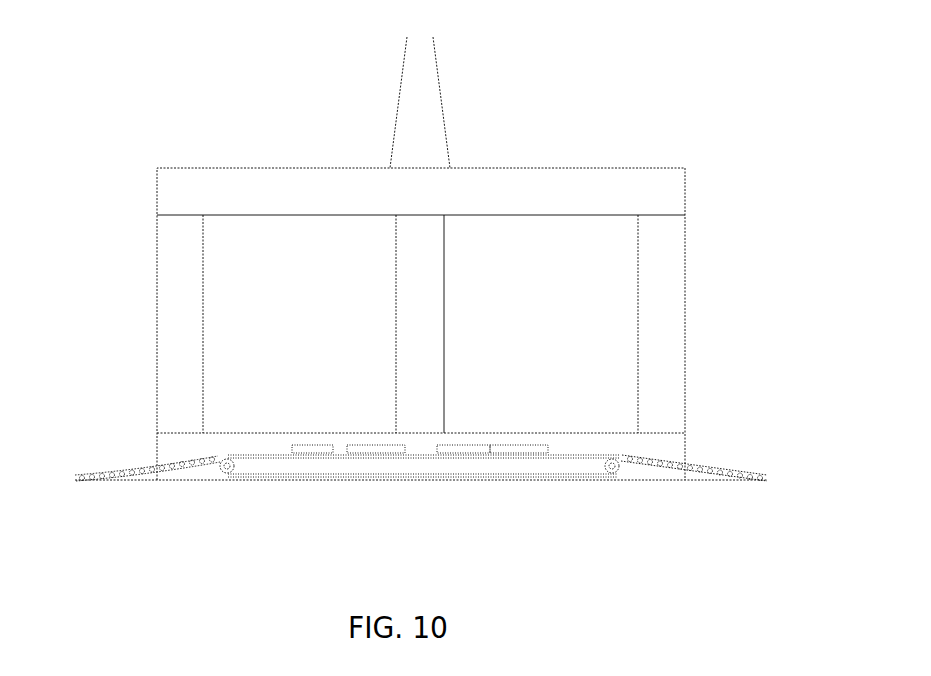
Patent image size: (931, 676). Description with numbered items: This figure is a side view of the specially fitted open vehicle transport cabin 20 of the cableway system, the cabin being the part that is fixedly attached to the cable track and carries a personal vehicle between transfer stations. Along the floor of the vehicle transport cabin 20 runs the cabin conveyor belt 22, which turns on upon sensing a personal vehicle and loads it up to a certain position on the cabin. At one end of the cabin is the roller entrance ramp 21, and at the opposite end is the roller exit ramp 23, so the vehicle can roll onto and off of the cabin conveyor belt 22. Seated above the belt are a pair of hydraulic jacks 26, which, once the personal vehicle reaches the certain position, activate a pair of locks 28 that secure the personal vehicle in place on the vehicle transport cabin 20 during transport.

The vehicle transport cabin 20 is at (150, 105).
The roller entrance ramp 21 is at (120, 472).
The cabin conveyor belt 22 is at (407, 463).
The roller exit ramp 23 is at (695, 465).
The hydraulic jacks 26 is at (468, 447).
The locks 28 is at (292, 448).